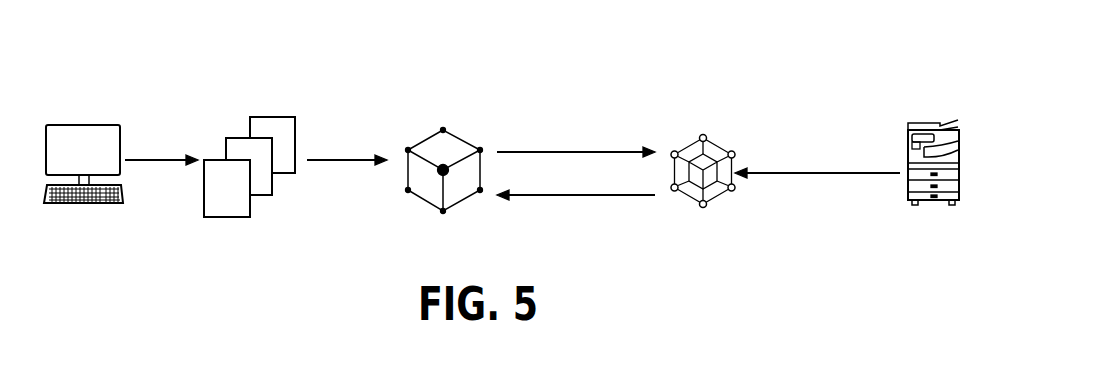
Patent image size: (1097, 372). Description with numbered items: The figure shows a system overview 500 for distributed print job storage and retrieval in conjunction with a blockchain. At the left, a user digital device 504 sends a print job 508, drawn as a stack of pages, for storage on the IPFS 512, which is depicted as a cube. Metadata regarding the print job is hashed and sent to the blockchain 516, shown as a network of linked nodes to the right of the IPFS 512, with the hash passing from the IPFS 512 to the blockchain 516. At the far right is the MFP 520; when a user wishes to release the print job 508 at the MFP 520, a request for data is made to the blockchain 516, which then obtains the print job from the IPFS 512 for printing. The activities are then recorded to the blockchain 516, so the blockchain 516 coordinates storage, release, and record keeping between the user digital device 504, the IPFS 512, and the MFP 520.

The system overview 500 is at (855, 95).
The user digital device 504 is at (120, 133).
The print job 508 is at (295, 133).
The IPFS 512 is at (466, 142).
The blockchain 516 is at (703, 208).
The MFP 520 is at (935, 206).